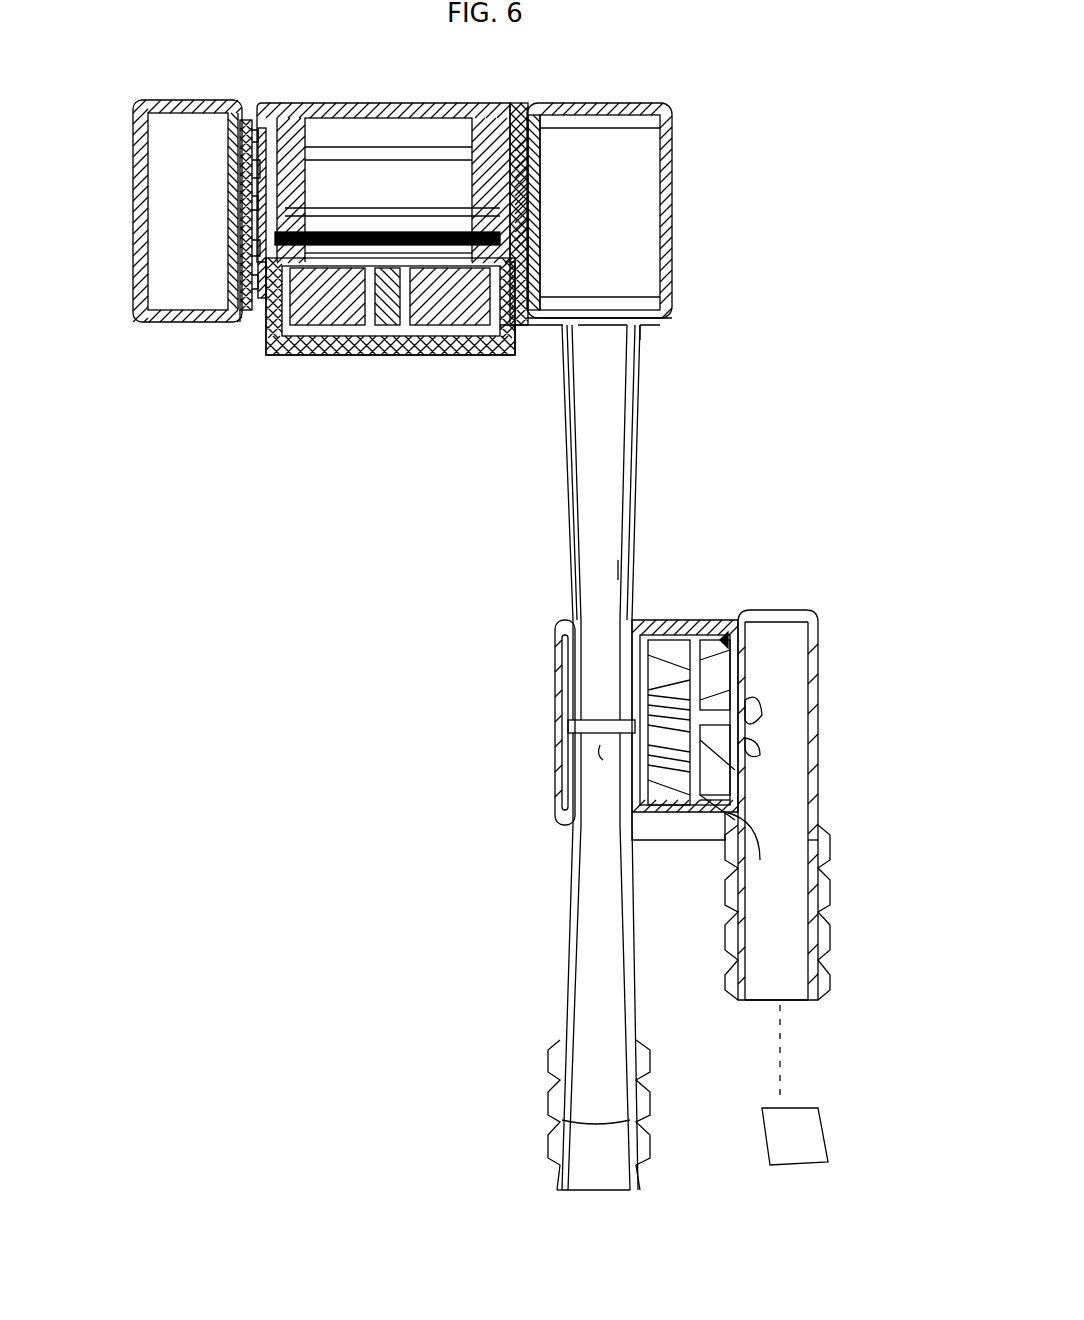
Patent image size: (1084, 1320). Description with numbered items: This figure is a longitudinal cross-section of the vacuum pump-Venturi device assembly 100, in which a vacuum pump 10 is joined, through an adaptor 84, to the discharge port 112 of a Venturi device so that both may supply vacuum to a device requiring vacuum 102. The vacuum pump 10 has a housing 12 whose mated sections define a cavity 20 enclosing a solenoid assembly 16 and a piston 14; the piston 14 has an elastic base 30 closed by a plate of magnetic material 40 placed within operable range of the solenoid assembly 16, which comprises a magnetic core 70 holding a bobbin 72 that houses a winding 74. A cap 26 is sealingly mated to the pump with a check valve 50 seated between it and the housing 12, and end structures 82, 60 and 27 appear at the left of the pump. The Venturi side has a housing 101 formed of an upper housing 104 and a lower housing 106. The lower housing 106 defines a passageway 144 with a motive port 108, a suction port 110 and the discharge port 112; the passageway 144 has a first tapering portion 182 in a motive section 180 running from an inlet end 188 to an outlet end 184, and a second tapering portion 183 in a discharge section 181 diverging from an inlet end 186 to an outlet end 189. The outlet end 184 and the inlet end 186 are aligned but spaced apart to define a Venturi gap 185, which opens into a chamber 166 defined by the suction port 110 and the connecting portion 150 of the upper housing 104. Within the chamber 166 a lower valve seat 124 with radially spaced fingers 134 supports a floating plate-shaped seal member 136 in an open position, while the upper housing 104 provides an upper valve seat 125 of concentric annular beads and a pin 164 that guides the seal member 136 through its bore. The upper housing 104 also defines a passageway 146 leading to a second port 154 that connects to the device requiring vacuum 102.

The vacuum pump 10 is at (243, 56).
The housing 12 is at (288, 108).
The piston 14 is at (530, 195).
The solenoid assembly 16 is at (300, 355).
The cavity 20 is at (512, 345).
The cap 26 is at (530, 110).
The flange 27 is at (243, 318).
The elastic base 30 is at (532, 238).
The plate of magnetic material 40 is at (412, 235).
The check valve 50 is at (540, 168).
The gasket 60 is at (245, 190).
The core 70 is at (395, 330).
The bobbin 72 is at (335, 330).
The winding 74 is at (452, 320).
The end cap 82 is at (133, 212).
The adaptor 84 is at (672, 182).
The vacuum pump-Venturi device assembly 100 is at (762, 108).
The housing 101 is at (876, 618).
The device requiring vacuum 102 is at (828, 1140).
The upper housing 104 is at (818, 790).
The lower housing 106 is at (555, 662).
The motive port 108 is at (640, 1195).
The suction port 110 is at (700, 630).
The discharge port 112 is at (640, 312).
The lower valve seat 124 is at (700, 805).
The upper valve seat 125 is at (761, 854).
The radially spaced fingers 134 is at (665, 660).
The seal member 136 is at (700, 680).
The passageway 144 is at (615, 572).
The passageway 146 is at (818, 852).
The connecting portion 150 is at (718, 812).
The second port 154 is at (812, 1004).
The pin 164 is at (735, 770).
The chamber 166 is at (722, 632).
The motive section 180 is at (563, 975).
The discharge section 181 is at (565, 462).
The first tapering portion 182 is at (625, 1028).
The second tapering portion 183 is at (630, 468).
The outlet end 184 is at (575, 740).
The Venturi gap 185 is at (620, 775).
The inlet end 186 is at (573, 705).
The inlet end 188 is at (556, 1190).
The outlet end 189 is at (645, 325).